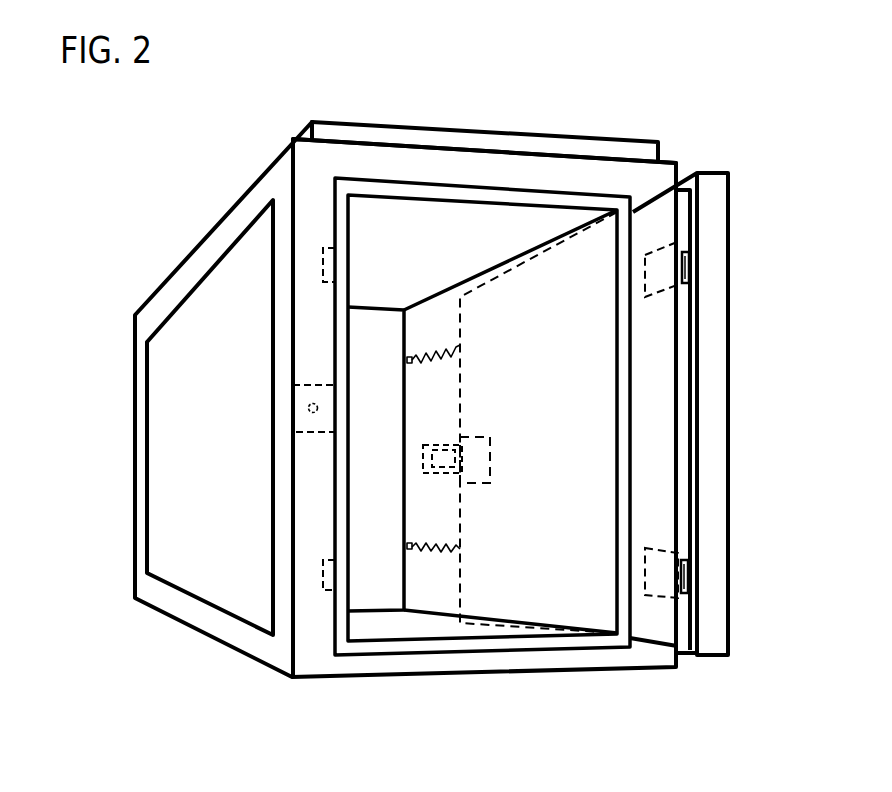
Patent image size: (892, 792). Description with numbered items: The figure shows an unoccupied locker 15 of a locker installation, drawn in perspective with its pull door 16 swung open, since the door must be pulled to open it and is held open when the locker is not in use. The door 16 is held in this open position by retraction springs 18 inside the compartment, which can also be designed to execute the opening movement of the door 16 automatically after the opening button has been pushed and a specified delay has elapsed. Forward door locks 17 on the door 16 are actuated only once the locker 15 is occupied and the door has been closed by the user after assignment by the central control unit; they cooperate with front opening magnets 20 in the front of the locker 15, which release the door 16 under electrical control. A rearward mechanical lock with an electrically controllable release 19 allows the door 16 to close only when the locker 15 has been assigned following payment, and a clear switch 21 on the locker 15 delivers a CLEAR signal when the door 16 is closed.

The locker 15 is at (203, 340).
The pull door 16 is at (715, 223).
The forward door lock 17 is at (720, 420).
The retraction springs 18 is at (549, 566).
The electrically controllable release 19 is at (425, 470).
The front opening magnets 20 is at (328, 253).
The clear switch 21 is at (306, 408).